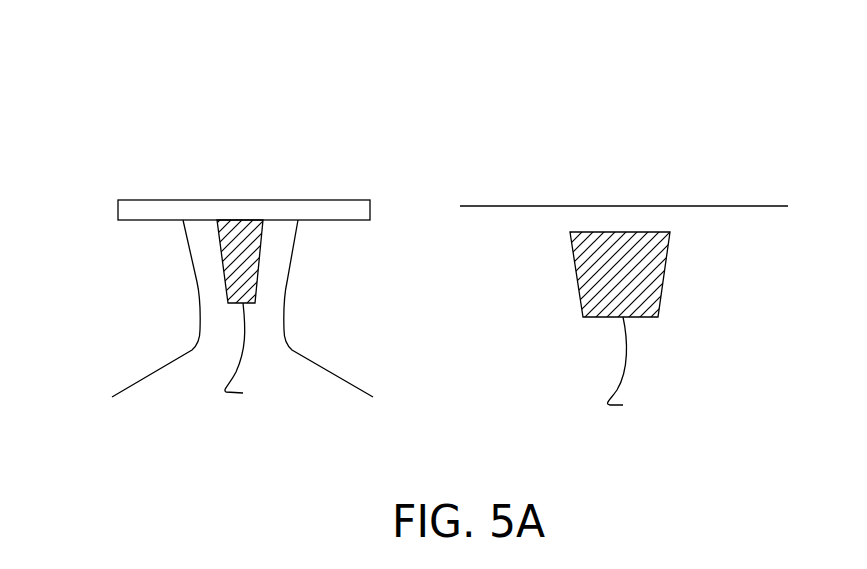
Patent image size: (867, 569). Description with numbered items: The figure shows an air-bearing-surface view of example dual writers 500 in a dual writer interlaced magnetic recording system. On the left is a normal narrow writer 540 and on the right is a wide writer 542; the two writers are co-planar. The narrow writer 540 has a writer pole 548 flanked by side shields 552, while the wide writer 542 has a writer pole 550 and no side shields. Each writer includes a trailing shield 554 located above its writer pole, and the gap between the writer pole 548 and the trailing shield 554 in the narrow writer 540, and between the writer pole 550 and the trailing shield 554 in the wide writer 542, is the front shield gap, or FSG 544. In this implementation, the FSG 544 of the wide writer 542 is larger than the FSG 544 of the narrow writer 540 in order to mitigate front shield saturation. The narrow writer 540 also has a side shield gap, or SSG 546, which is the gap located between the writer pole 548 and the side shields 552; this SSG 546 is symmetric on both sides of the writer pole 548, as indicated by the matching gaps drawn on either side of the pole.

The dual writers 500 is at (136, 60).
The narrow writer 540 is at (230, 163).
The wide writer 542 is at (630, 162).
The FSG 544 is at (266, 206).
The SSG 546 is at (198, 261).
The writer pole 548 is at (256, 355).
The writer pole 550 is at (639, 370).
The side shields 552 is at (185, 320).
The trailing shield 554 is at (208, 190).